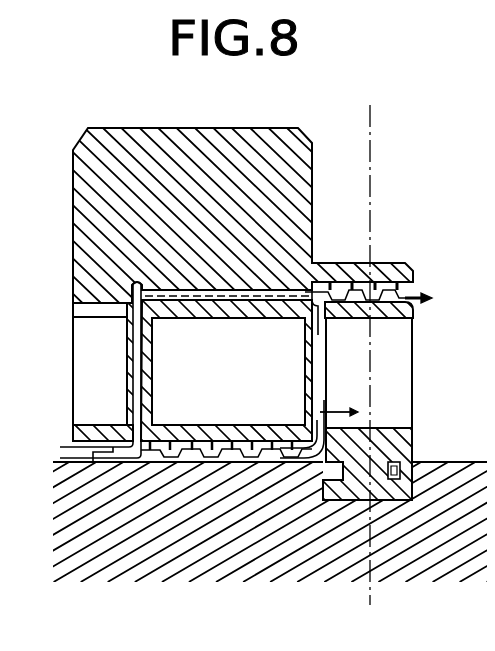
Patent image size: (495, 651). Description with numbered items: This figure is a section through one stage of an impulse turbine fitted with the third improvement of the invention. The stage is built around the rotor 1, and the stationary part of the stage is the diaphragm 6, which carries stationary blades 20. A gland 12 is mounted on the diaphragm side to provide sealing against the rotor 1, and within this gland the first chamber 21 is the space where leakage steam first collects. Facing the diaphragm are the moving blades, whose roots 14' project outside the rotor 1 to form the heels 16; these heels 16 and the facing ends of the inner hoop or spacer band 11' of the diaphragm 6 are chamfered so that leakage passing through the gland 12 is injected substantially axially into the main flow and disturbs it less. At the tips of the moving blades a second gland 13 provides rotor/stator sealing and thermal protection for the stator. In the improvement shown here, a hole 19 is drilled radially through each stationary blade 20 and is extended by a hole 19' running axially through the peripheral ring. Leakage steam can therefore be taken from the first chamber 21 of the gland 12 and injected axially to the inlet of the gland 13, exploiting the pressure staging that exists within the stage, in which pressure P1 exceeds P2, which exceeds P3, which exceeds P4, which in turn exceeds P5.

The rotor 1 is at (74, 547).
The diaphragm 6 is at (97, 251).
The inner hoop or spacer band 11' is at (226, 370).
The gland 12 is at (100, 453).
The gland 13 is at (406, 294).
The roots 14' is at (431, 453).
The heels 16 is at (386, 427).
The hole 19 is at (92, 370).
The hole 19' is at (252, 242).
The stationary blade 20 is at (98, 389).
The first chamber 21 is at (143, 456).
The pressure P1 is at (67, 424).
The pressure P2 is at (140, 456).
The pressure P3 is at (307, 347).
The pressure P4 is at (313, 406).
The pressure P5 is at (461, 415).